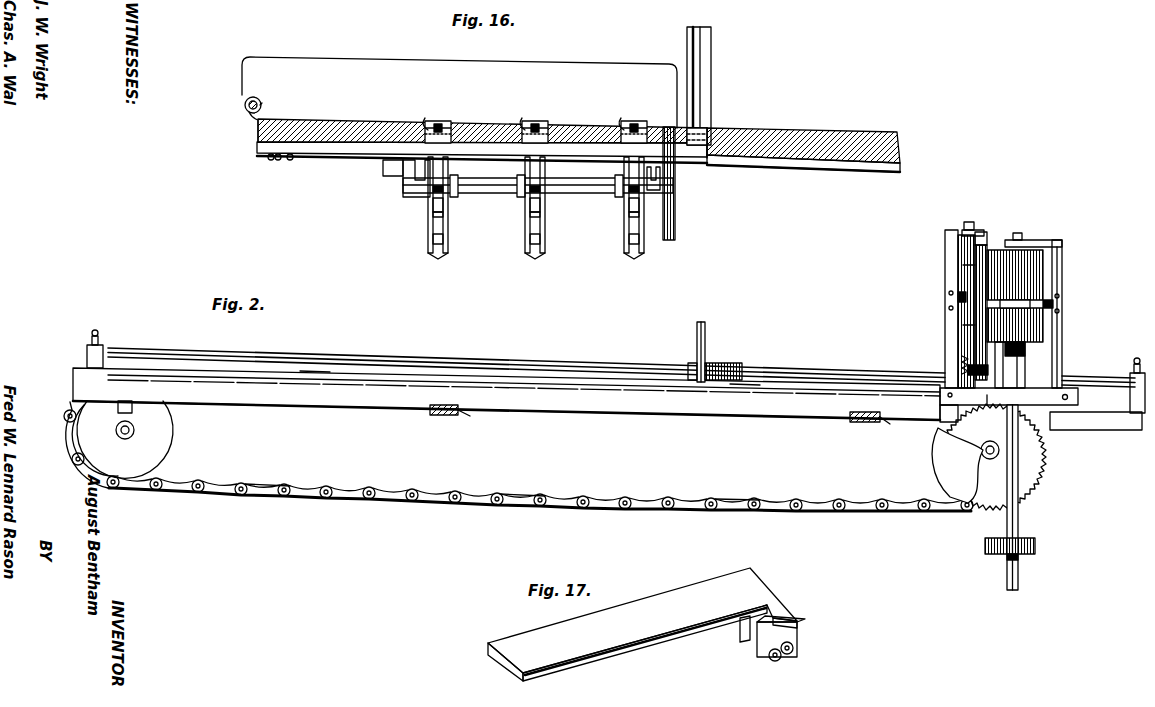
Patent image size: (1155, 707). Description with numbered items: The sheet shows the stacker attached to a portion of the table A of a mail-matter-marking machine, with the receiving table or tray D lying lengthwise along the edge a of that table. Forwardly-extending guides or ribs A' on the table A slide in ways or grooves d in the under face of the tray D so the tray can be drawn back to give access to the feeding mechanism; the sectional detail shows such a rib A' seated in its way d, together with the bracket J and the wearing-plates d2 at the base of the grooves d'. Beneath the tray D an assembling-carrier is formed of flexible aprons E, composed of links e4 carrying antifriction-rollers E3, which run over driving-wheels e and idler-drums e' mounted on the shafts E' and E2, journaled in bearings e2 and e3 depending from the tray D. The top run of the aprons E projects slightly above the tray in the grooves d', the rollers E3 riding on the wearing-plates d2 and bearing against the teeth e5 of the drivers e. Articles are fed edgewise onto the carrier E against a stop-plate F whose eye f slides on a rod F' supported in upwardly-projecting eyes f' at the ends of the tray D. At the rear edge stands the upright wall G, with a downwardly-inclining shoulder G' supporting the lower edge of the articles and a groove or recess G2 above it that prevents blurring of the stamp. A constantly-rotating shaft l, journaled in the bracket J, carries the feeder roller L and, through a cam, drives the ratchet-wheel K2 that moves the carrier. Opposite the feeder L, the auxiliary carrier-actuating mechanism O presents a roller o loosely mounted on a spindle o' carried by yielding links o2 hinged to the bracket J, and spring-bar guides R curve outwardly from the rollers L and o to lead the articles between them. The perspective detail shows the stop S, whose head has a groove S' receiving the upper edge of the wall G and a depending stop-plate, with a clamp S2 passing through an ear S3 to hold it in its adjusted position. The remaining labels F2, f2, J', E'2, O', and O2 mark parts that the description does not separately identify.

In FIG. 16, the rod F' is at (459, 83).
In FIG. 2, the rod F' is at (621, 360).
In FIG. 16, the table A is at (803, 127).
In FIG. 16, the guides or ribs A' is at (578, 164).
In FIG. 2, the guides or ribs A' is at (652, 425).
In FIG. 16, the table or tray D is at (380, 156).
In FIG. 2, the table or tray D is at (602, 405).
In FIG. 16, the ways or grooves d is at (334, 168).
In FIG. 2, the ways or grooves d is at (678, 427).
In FIG. 16, the grooves d' is at (516, 111).
In FIG. 16, the wearing-plates d2 is at (392, 176).
In FIG. 16, the roller F2 is at (244, 105).
In FIG. 16, the roller pin f2 is at (261, 104).
In FIG. 16, the bracket J is at (704, 86).
In FIG. 2, the bracket J is at (1041, 409).
In FIG. 16, the column slot J' is at (718, 115).
In FIG. 16, the shaft E' is at (538, 186).
In FIG. 2, the shaft E' is at (524, 365).
In FIG. 2, the hub E'2 is at (985, 463).
In FIG. 16, the bearings e2 is at (410, 195).
In FIG. 16, the ratchet-wheel K2 is at (677, 228).
In FIG. 2, the ratchet-wheel K2 is at (1040, 455).
In FIG. 16, the edge of the table a is at (712, 145).
In FIG. 16, the flexible aprons E is at (536, 173).
In FIG. 2, the flexible aprons E is at (519, 467).
In FIG. 16, the links e4 is at (452, 126).
In FIG. 2, the links e4 is at (305, 373).
In FIG. 16, the teeth e5 is at (443, 192).
In FIG. 16, the driving-wheels e is at (536, 217).
In FIG. 2, the driving-wheels e is at (944, 465).
In FIG. 16, the antifriction-rollers E3 is at (522, 142).
In FIG. 2, the antifriction-rollers E3 is at (290, 486).
In FIG. 2, the upwardly-projecting eyes f' is at (616, 367).
In FIG. 2, the stop-plate F is at (711, 352).
In FIG. 2, the eye f is at (715, 359).
In FIG. 2, the idler-drums e' is at (140, 439).
In FIG. 2, the bearings e3 is at (134, 430).
In FIG. 2, the shaft E2 is at (124, 434).
In FIG. 2, the auxiliary carrier-actuating mechanism O is at (989, 325).
In FIG. 2, the links or yielding bearings o2 is at (968, 232).
In FIG. 2, the spindle o' is at (982, 225).
In FIG. 2, the upright wall or plate G is at (998, 293).
In FIG. 2, the feeder L is at (1045, 270).
In FIG. 2, the engaging face or roller o is at (953, 294).
In FIG. 2, the guides R is at (957, 300).
In FIG. 2, the groove or recess G2 is at (975, 358).
In FIG. 2, the spring block O' is at (951, 366).
In FIG. 2, the stud O2 is at (958, 394).
In FIG. 2, the shoulder G' is at (979, 414).
In FIG. 2, the constantly-rotating shaft l is at (1019, 516).
In FIG. 17, the stop S is at (642, 623).
In FIG. 17, the groove S' is at (777, 616).
In FIG. 17, the ear S3 is at (797, 634).
In FIG. 17, the clamp S2 is at (793, 651).